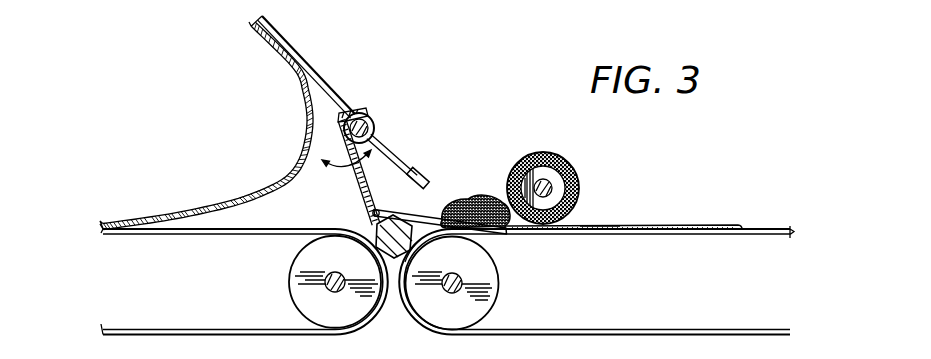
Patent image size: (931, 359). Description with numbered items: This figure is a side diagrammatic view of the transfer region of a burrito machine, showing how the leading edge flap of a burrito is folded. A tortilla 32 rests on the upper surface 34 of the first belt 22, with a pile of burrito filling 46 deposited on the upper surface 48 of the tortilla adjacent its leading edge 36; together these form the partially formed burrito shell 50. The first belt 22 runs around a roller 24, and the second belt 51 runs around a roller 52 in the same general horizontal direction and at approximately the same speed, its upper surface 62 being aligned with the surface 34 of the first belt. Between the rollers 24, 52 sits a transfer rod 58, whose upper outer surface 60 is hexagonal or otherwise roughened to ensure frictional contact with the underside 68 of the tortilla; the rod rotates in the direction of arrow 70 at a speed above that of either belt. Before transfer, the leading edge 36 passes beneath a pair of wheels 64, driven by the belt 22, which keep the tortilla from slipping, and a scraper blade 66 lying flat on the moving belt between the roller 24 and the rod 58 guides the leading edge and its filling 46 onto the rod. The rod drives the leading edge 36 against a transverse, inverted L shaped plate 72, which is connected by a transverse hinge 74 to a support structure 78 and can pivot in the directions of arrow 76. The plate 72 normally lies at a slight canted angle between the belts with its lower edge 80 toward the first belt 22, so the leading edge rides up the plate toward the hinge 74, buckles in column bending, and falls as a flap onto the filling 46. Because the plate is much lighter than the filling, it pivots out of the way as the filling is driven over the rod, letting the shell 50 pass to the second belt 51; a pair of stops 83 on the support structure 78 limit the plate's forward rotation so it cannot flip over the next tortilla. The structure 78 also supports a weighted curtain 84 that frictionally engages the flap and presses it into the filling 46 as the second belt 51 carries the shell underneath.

The first belt 22 is at (762, 235).
The roller 24 is at (499, 287).
The tortilla 32 is at (645, 227).
The upper surface of the belt 34 is at (781, 232).
The leading edge 36 is at (378, 208).
The burrito filling 46 is at (478, 200).
The upper surface of tortilla 48 is at (598, 228).
The burrito shell 50 is at (582, 214).
The second belt 51 is at (263, 234).
The roller 52 is at (297, 290).
The transfer rod 58 is at (375, 256).
The upper outer surface of transfer rod 60 is at (393, 213).
The upper surface of second belt 62 is at (284, 220).
The wheels 64 is at (550, 163).
The scraper blade 66 is at (432, 238).
The underside of the tortilla 68 is at (373, 214).
The arrow 70 is at (396, 262).
The inverted L shaped plate 72 is at (348, 178).
The transverse hinge 74 is at (378, 122).
The arrow 76 is at (302, 90).
The support structure 78 is at (366, 113).
The lower edge of plate 80 is at (369, 241).
The stops 83 is at (424, 169).
The weighted curtain 84 is at (213, 205).